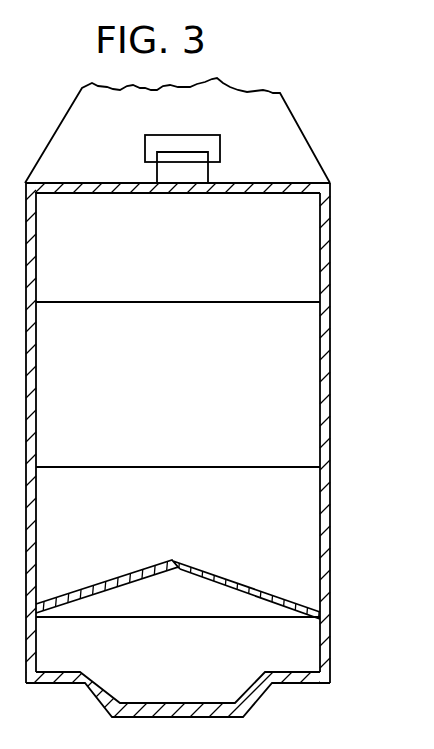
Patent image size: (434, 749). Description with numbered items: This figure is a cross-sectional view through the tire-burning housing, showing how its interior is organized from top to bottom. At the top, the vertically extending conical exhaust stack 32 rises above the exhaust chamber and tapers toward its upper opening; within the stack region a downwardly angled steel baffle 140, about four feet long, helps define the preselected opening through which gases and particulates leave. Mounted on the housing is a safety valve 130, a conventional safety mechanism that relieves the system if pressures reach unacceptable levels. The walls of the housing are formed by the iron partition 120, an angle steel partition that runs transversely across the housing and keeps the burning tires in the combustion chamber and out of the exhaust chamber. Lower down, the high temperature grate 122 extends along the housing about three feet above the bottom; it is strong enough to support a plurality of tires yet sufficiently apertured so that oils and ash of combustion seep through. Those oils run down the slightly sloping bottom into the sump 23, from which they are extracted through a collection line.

The conical exhaust stack 32 is at (110, 144).
The safety valve 130 is at (205, 142).
The steel baffle 140 is at (192, 405).
The high temperature grate 122 is at (190, 568).
The partition 120 is at (307, 573).
The sump 23 is at (255, 706).